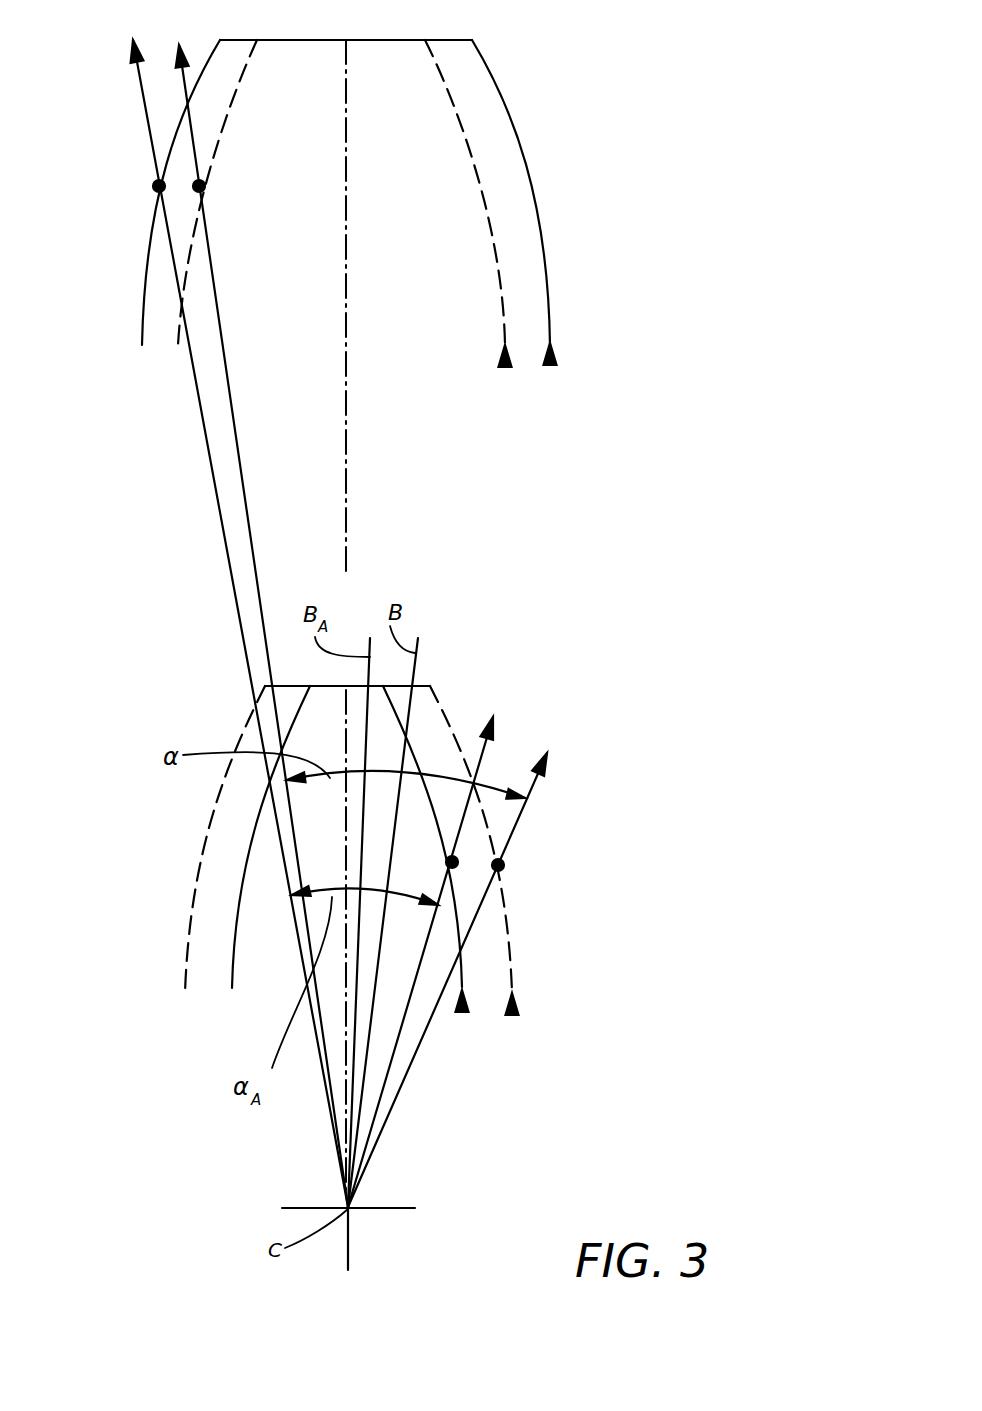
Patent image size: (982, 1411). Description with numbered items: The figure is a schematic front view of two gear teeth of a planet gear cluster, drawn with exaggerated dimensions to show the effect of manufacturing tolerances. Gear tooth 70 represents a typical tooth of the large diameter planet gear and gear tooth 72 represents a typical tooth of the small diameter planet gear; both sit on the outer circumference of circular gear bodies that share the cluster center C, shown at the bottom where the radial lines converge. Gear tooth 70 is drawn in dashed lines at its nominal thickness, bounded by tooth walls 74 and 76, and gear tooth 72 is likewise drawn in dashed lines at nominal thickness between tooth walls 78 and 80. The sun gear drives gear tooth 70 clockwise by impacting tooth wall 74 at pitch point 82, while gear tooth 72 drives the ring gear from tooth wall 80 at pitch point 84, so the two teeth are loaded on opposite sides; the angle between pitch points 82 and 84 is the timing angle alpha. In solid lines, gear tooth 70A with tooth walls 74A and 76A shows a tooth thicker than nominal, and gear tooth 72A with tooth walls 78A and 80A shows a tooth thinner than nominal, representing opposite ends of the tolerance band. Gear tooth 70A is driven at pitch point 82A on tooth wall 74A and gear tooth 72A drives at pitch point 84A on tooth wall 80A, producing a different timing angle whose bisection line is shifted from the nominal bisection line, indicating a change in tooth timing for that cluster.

The gear tooth 70 is at (505, 360).
The gear tooth 70A is at (550, 358).
The gear tooth 72 is at (512, 1008).
The gear tooth 72A is at (462, 1005).
The tooth wall 74 is at (240, 72).
The tooth wall 74A is at (143, 256).
The tooth wall 76 is at (440, 70).
The tooth wall 76A is at (505, 100).
The tooth wall 78 is at (184, 960).
The tooth wall 78A is at (232, 978).
The tooth wall 80 is at (442, 703).
The tooth wall 80A is at (421, 753).
The pitch point 82 is at (199, 186).
The pitch point 82A is at (157, 186).
The pitch point 84 is at (498, 865).
The pitch point 84A is at (452, 862).